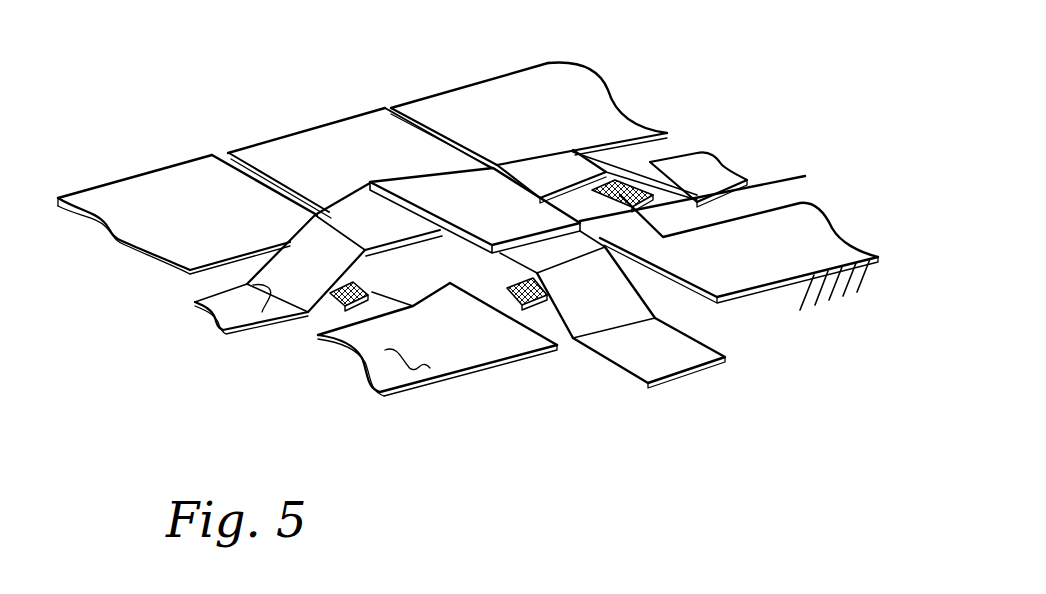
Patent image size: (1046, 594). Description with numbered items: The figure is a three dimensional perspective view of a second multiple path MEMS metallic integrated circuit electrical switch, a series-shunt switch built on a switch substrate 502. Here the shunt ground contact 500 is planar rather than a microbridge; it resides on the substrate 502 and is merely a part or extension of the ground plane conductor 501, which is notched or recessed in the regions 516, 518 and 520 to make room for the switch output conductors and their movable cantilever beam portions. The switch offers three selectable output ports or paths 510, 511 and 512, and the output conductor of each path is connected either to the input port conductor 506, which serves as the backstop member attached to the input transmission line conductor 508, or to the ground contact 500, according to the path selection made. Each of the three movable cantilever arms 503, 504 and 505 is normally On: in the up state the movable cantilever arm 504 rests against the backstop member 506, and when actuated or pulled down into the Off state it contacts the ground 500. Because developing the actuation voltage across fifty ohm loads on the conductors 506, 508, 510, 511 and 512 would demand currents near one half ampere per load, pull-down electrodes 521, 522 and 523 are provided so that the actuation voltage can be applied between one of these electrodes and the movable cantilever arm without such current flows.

The ground contact 500 is at (452, 240).
The ground plane conductor 501 is at (375, 365).
The switch substrate 502 is at (862, 284).
The cantilever arm 503 is at (545, 165).
The movable cantilever arm 504 is at (377, 226).
The cantilever arm 505 is at (468, 383).
The backstop member 506 is at (420, 189).
The input transmission line conductor 508 is at (357, 112).
The output path 510 is at (195, 302).
The output path 511 is at (696, 168).
The output path 512 is at (668, 350).
The notched region 516 is at (190, 272).
The notched region 518 is at (556, 346).
The notched region 520 is at (790, 205).
The pull-down electrode 521 is at (338, 304).
The pull-down electrode 522 is at (655, 207).
The pull-down electrode 523 is at (545, 310).